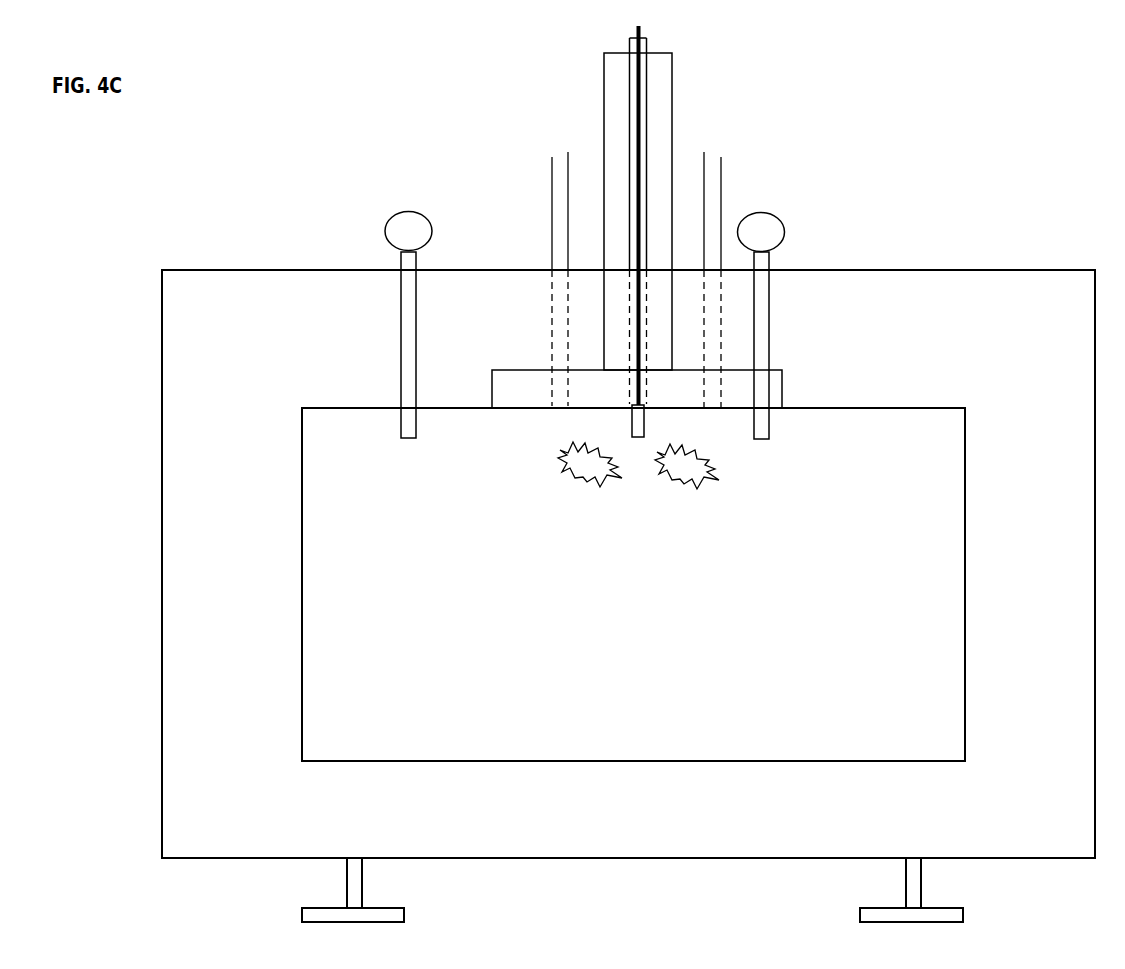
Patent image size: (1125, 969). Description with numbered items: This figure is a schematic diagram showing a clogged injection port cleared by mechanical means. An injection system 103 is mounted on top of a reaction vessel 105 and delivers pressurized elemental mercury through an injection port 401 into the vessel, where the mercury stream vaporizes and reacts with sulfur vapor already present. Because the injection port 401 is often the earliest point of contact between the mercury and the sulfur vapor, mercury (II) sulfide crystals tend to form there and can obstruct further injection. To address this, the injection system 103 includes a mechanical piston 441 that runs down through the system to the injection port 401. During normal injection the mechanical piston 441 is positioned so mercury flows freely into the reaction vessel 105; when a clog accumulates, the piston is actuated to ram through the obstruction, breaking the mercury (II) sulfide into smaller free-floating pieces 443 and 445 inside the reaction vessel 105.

The injection system 103 is at (604, 87).
The reaction vessel 105 is at (302, 585).
The injection port 401 is at (624, 395).
The mechanical piston 441 is at (638, 437).
The free-floating piece 443 is at (575, 480).
The free-floating piece 445 is at (700, 485).